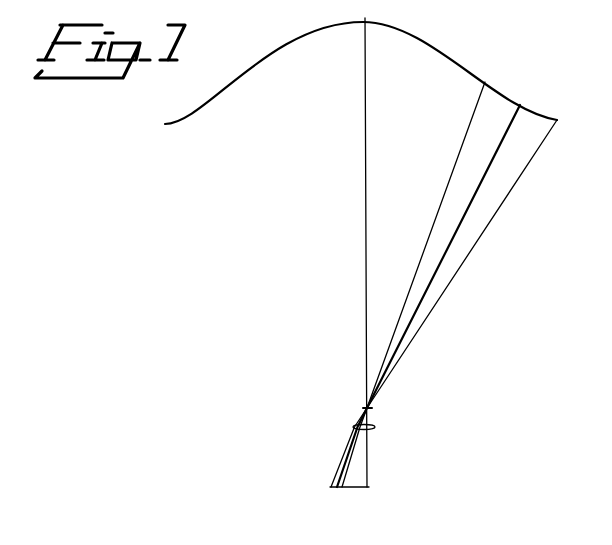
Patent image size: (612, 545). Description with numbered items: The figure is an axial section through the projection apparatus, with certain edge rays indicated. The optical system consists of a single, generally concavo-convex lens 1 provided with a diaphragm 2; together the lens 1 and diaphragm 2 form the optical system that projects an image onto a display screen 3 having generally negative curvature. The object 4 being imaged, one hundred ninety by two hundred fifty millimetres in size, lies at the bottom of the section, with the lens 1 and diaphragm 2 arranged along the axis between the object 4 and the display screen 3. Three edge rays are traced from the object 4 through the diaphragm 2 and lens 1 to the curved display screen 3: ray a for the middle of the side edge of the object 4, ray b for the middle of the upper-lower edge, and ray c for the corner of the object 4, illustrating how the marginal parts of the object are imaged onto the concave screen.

The lens 1 is at (381, 426).
The diaphragm 2 is at (376, 408).
The display screen 3 is at (257, 64).
The object 4 is at (358, 488).
The edge ray for the middle of the side edge a is at (459, 160).
The edge ray for the middle of the upper-lower edge b is at (502, 140).
The edge ray for the corner of the object c is at (520, 183).